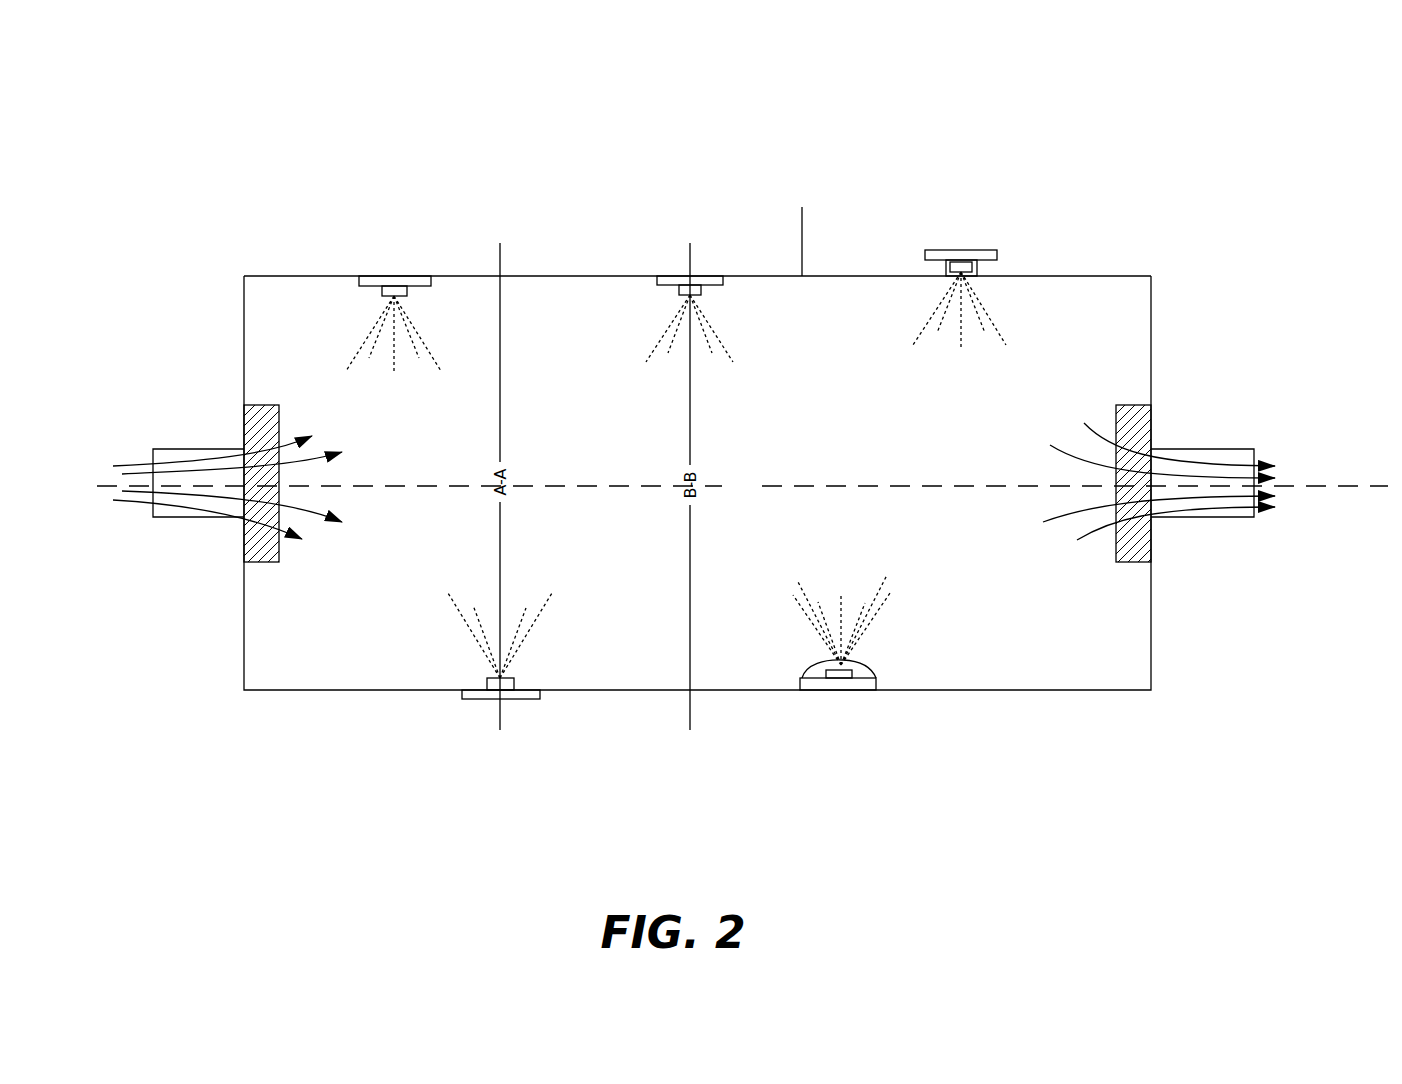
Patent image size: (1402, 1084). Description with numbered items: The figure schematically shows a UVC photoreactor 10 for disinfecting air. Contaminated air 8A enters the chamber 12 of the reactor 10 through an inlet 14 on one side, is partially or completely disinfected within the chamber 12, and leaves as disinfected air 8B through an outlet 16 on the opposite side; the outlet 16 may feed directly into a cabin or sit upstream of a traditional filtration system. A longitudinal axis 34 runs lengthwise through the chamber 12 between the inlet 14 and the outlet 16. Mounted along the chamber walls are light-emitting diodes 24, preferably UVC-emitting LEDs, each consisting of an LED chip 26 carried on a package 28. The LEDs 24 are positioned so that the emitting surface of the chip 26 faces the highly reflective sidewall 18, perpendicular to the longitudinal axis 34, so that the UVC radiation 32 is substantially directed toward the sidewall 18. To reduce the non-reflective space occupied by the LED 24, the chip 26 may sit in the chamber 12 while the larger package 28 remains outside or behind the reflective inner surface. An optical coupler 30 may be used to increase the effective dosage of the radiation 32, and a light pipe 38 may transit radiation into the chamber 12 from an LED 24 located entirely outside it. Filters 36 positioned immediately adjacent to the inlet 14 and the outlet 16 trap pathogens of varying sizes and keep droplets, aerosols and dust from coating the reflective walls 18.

The UVC photoreactor 10 is at (922, 172).
The chamber 12 is at (544, 276).
The inlet 14 is at (153, 517).
The outlet 16 is at (1257, 517).
The sidewall 18 is at (806, 214).
The light-emitting diode 24 is at (389, 276).
The LED chip 26 is at (487, 683).
The package 28 is at (479, 700).
The optical coupler 30 is at (868, 667).
The radiation 32 is at (888, 620).
The longitudinal axis 34 is at (742, 488).
The filter 36 is at (279, 565).
The light pipe 38 is at (987, 268).
The contaminated air 8A is at (88, 466).
The disinfected air 8B is at (1298, 466).